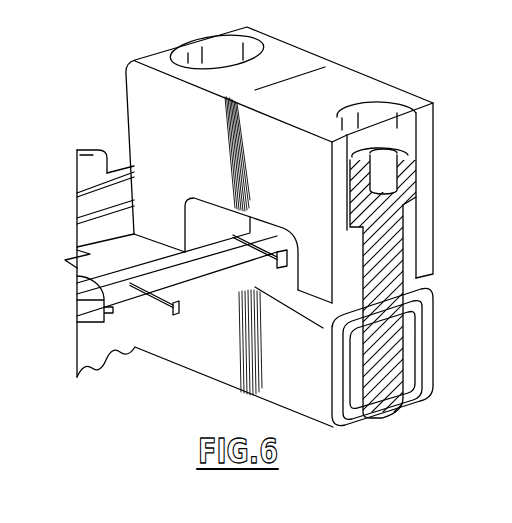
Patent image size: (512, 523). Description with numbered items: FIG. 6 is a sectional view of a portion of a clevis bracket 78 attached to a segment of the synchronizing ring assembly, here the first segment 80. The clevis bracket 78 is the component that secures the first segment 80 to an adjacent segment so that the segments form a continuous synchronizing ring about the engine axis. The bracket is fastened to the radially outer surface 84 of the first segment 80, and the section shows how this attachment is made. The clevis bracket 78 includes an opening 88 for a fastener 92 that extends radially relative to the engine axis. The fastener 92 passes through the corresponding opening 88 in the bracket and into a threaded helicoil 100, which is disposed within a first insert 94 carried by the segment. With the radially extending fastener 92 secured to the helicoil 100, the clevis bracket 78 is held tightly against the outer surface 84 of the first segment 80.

The clevis bracket 78 is at (355, 82).
The first segment 80 is at (242, 333).
The radially outer surface 84 is at (121, 215).
The opening 88 is at (250, 50).
The fastener 92 is at (392, 247).
The first insert 94 is at (413, 337).
The threaded helicoil 100 is at (407, 370).